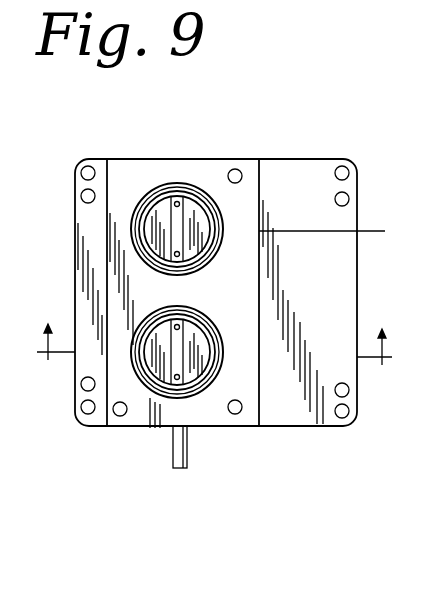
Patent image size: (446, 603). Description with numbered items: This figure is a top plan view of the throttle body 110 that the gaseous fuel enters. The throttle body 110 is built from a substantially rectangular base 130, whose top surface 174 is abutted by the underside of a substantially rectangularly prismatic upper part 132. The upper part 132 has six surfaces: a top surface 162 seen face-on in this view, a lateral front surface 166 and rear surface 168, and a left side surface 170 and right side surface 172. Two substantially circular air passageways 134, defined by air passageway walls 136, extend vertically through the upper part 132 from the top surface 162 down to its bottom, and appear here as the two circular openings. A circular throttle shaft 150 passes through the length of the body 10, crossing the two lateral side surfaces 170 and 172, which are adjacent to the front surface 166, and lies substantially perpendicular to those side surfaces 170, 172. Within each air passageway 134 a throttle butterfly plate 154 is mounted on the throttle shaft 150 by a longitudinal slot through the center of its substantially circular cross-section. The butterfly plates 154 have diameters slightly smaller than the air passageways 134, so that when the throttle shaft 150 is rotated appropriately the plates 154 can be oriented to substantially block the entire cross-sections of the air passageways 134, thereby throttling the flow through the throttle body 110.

The body 10 is at (216, 329).
The throttle body 110 is at (218, 405).
The base 130 is at (278, 167).
The upper part 132 is at (192, 172).
The air passageway 134 is at (145, 222).
The air passageway wall 136 is at (148, 400).
The throttle shaft 150 is at (180, 468).
The throttle butterfly plate 154 is at (157, 363).
The top surface 162 is at (210, 162).
The front surface 166 is at (107, 270).
The rear surface 168 is at (385, 231).
The left side surface 170 is at (142, 160).
The right side surface 172 is at (252, 427).
The top surface of the base 174 is at (92, 340).